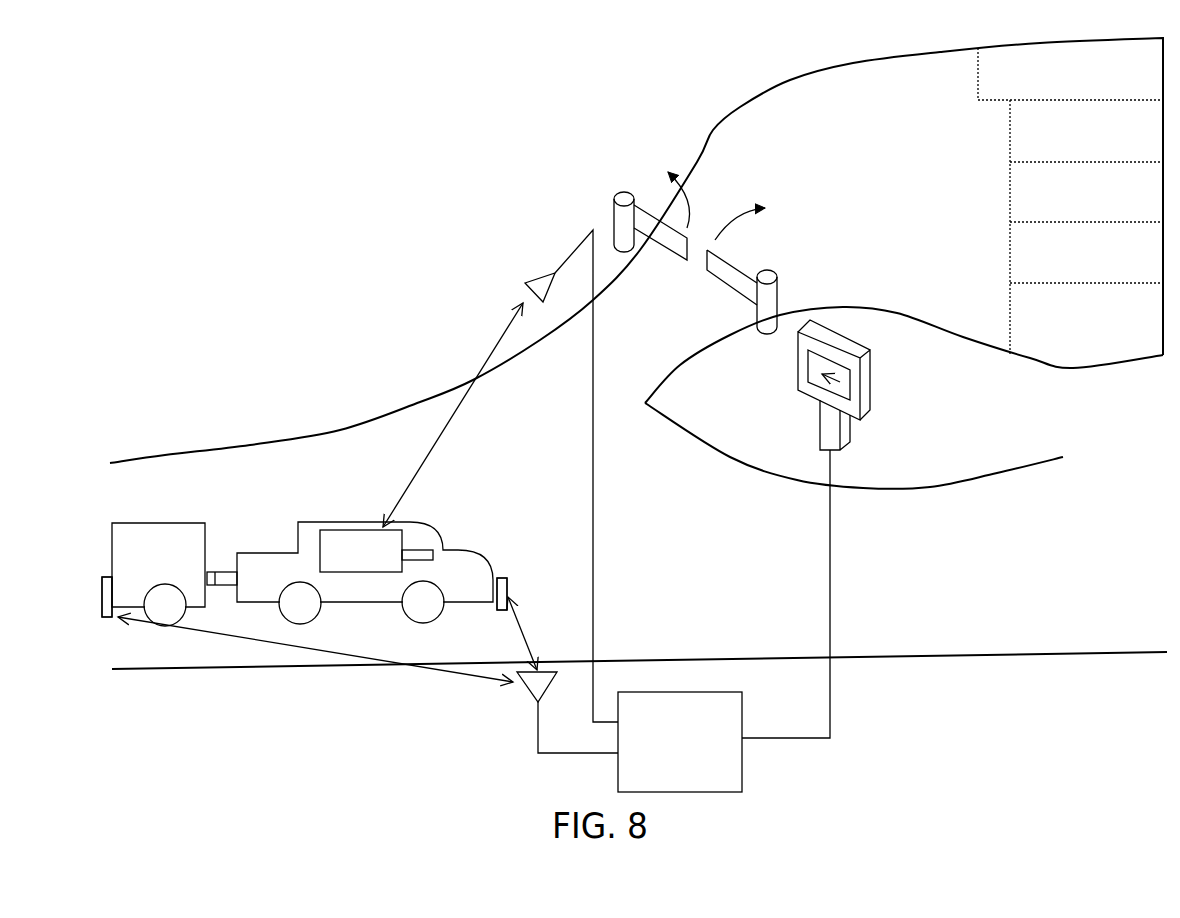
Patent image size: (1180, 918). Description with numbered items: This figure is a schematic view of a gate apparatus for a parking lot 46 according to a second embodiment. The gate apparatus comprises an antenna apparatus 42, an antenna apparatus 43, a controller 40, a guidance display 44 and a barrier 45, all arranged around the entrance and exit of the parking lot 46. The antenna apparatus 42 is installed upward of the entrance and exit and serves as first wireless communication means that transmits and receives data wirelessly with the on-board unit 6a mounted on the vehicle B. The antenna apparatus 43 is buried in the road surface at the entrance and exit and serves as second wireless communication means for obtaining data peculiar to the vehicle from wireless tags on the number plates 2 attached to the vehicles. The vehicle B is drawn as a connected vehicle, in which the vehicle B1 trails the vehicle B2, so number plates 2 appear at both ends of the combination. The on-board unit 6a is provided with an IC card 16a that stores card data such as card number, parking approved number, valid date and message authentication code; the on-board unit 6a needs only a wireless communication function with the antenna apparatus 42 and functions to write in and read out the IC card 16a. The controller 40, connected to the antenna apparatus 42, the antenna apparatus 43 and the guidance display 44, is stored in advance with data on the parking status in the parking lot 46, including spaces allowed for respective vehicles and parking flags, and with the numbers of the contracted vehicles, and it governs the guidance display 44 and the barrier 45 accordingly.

The number plate 2 is at (110, 547).
The on-board unit 6a is at (362, 572).
The IC card 16a is at (423, 548).
The vehicle B is at (304, 485).
The vehicle B1 is at (372, 510).
The vehicle B2 is at (163, 523).
The controller 40 is at (742, 753).
The antenna apparatus 42 is at (530, 283).
The antenna apparatus 43 is at (523, 697).
The guidance display 44 is at (870, 390).
The barrier 45 is at (613, 202).
The parking lot 46 is at (867, 73).